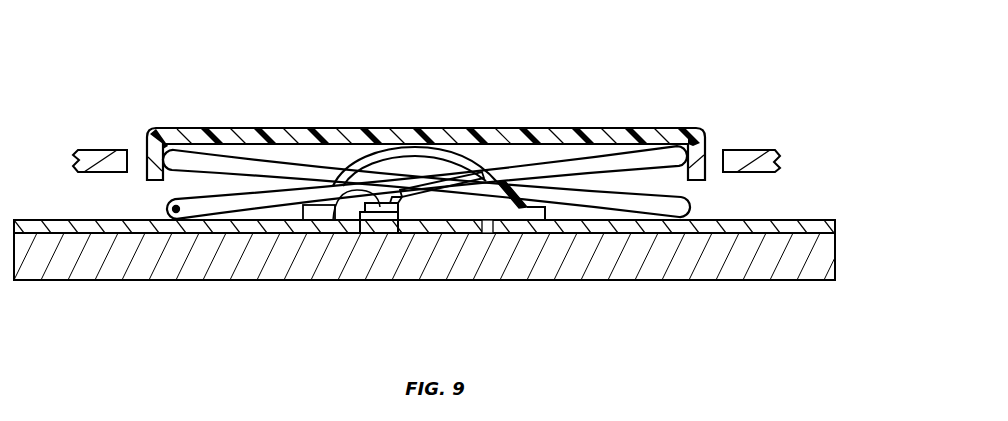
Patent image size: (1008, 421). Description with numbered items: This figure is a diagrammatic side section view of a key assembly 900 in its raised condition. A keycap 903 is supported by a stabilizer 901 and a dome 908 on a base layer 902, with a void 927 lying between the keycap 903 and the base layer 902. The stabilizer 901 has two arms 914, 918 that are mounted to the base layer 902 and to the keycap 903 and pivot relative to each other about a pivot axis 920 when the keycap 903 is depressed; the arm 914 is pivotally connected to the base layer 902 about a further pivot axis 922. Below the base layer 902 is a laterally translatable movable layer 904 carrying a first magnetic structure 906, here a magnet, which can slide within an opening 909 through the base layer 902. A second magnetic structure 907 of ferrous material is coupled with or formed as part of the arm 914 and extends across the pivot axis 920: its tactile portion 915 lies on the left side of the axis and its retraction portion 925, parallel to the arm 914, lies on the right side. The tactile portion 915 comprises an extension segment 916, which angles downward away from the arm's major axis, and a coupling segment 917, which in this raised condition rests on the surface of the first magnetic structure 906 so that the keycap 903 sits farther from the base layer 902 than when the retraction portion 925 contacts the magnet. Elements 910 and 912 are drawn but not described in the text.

The key assembly 900 is at (690, 81).
The stabilizer 901 is at (287, 140).
The base layer 902 is at (838, 225).
The keycap 903 is at (603, 128).
The movable layer 904 is at (836, 256).
The first magnetic structure 906 is at (372, 229).
The second magnetic structure 907 is at (499, 174).
The dome 908 is at (446, 150).
The opening 909 is at (492, 223).
The keycap surface 910 is at (541, 128).
The housing frame 912 is at (92, 150).
The arm 914 is at (237, 206).
The tactile portion 915 is at (349, 198).
The extension segment 916 is at (406, 195).
The coupling segment 917 is at (381, 212).
The arm 918 is at (208, 151).
The pivot axis 920 is at (397, 190).
The pivot axis 922 is at (175, 213).
The retraction portion 925 is at (464, 180).
The void 927 is at (188, 176).